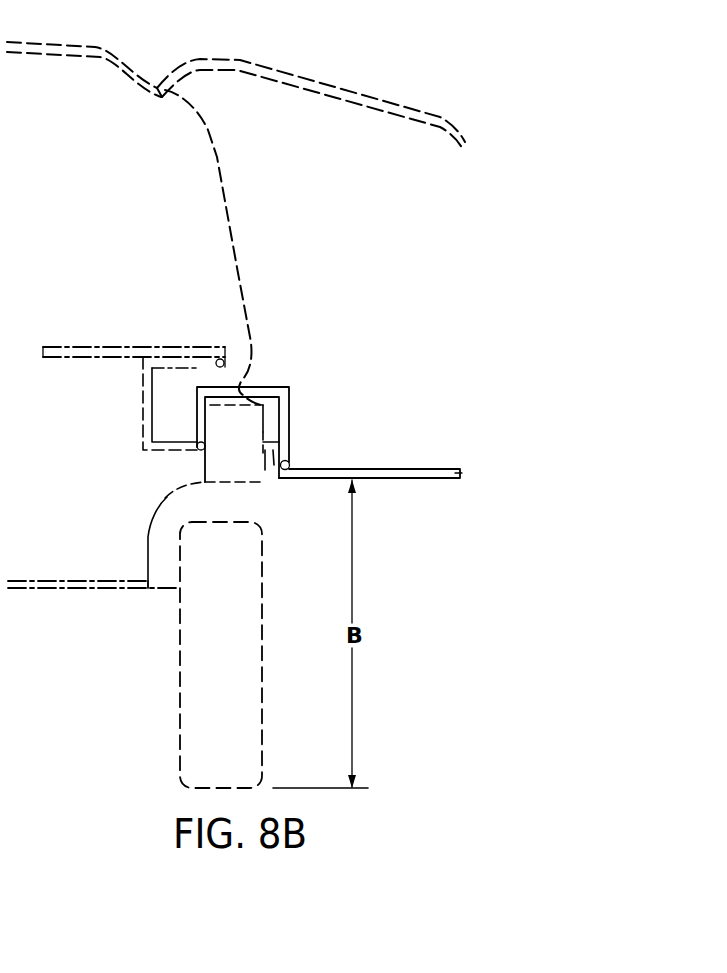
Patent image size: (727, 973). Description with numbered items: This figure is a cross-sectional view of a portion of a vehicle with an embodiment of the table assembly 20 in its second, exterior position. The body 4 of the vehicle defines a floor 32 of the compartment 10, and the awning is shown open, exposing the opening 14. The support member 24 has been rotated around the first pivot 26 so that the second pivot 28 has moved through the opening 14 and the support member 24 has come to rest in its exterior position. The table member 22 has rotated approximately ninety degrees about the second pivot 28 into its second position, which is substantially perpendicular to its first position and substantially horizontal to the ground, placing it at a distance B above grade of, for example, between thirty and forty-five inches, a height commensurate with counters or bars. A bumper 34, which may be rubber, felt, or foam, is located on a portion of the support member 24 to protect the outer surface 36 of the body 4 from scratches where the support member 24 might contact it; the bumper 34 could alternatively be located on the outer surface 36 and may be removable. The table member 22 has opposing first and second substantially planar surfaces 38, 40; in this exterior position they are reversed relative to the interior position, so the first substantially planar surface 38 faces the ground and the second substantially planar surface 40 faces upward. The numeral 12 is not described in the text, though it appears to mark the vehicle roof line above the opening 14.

The body 4 is at (218, 468).
The compartment 10 is at (87, 425).
The vehicle roof 12 is at (296, 80).
The opening 14 is at (182, 200).
The table assembly 20 is at (314, 411).
The table member 22 is at (462, 473).
The support member 24 is at (291, 397).
The first pivot 26 is at (199, 452).
The second pivot 28 is at (290, 465).
The floor 32 is at (20, 588).
The bumper 34 is at (274, 465).
The outer surface 36 is at (265, 470).
The first substantially planar surface 38 is at (420, 490).
The second substantially planar surface 40 is at (420, 458).